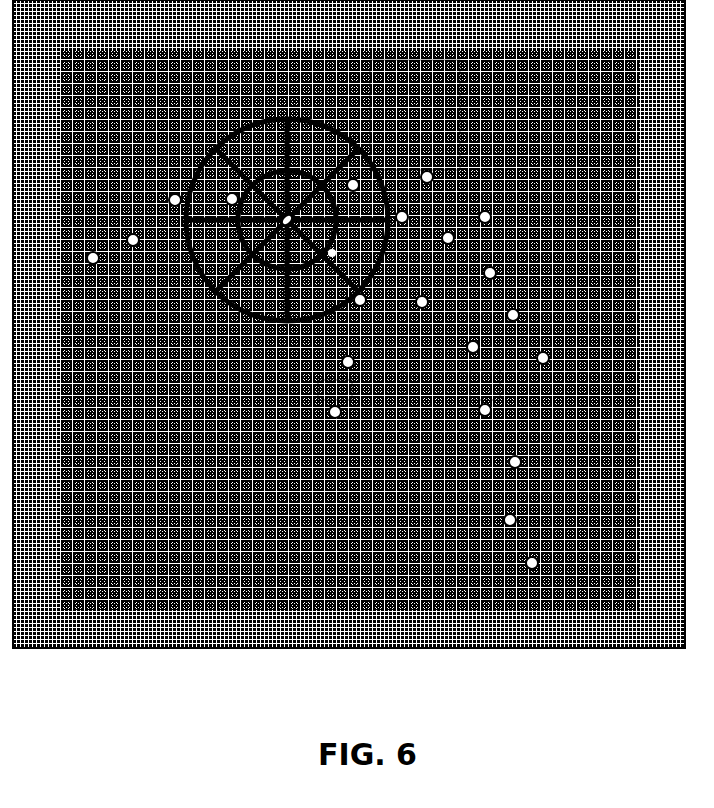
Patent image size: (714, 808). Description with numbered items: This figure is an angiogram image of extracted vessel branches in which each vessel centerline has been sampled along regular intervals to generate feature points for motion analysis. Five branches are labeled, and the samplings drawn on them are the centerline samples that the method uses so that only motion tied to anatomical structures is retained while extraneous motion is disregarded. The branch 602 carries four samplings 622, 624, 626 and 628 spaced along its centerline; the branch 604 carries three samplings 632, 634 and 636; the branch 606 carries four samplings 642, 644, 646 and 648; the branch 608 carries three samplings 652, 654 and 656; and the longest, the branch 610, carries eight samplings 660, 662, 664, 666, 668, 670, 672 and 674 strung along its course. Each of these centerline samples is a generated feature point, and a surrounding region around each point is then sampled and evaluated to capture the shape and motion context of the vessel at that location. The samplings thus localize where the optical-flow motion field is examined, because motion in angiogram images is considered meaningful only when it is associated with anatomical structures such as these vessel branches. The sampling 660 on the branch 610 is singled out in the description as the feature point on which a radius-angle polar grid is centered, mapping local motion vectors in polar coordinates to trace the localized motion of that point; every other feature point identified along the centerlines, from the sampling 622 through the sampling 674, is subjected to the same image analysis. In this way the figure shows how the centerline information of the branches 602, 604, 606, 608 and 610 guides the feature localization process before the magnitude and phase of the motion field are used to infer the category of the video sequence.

The branch 602 is at (198, 157).
The branch 604 is at (397, 163).
The branch 606 is at (496, 273).
The branch 608 is at (333, 388).
The branch 610 is at (482, 382).
The sampling 622 is at (93, 252).
The sampling 624 is at (133, 246).
The sampling 626 is at (175, 194).
The sampling 628 is at (232, 193).
The sampling 632 is at (357, 179).
The sampling 634 is at (427, 171).
The sampling 636 is at (491, 217).
The sampling 642 is at (408, 215).
The sampling 644 is at (454, 239).
The sampling 646 is at (519, 315).
The sampling 648 is at (549, 358).
The sampling 652 is at (358, 307).
The sampling 654 is at (342, 364).
The sampling 656 is at (342, 417).
The sampling 660 is at (275, 170).
The sampling 662 is at (330, 257).
The sampling 664 is at (420, 308).
The sampling 666 is at (467, 351).
The sampling 668 is at (479, 408).
The sampling 670 is at (522, 462).
The sampling 672 is at (517, 520).
The sampling 674 is at (539, 563).